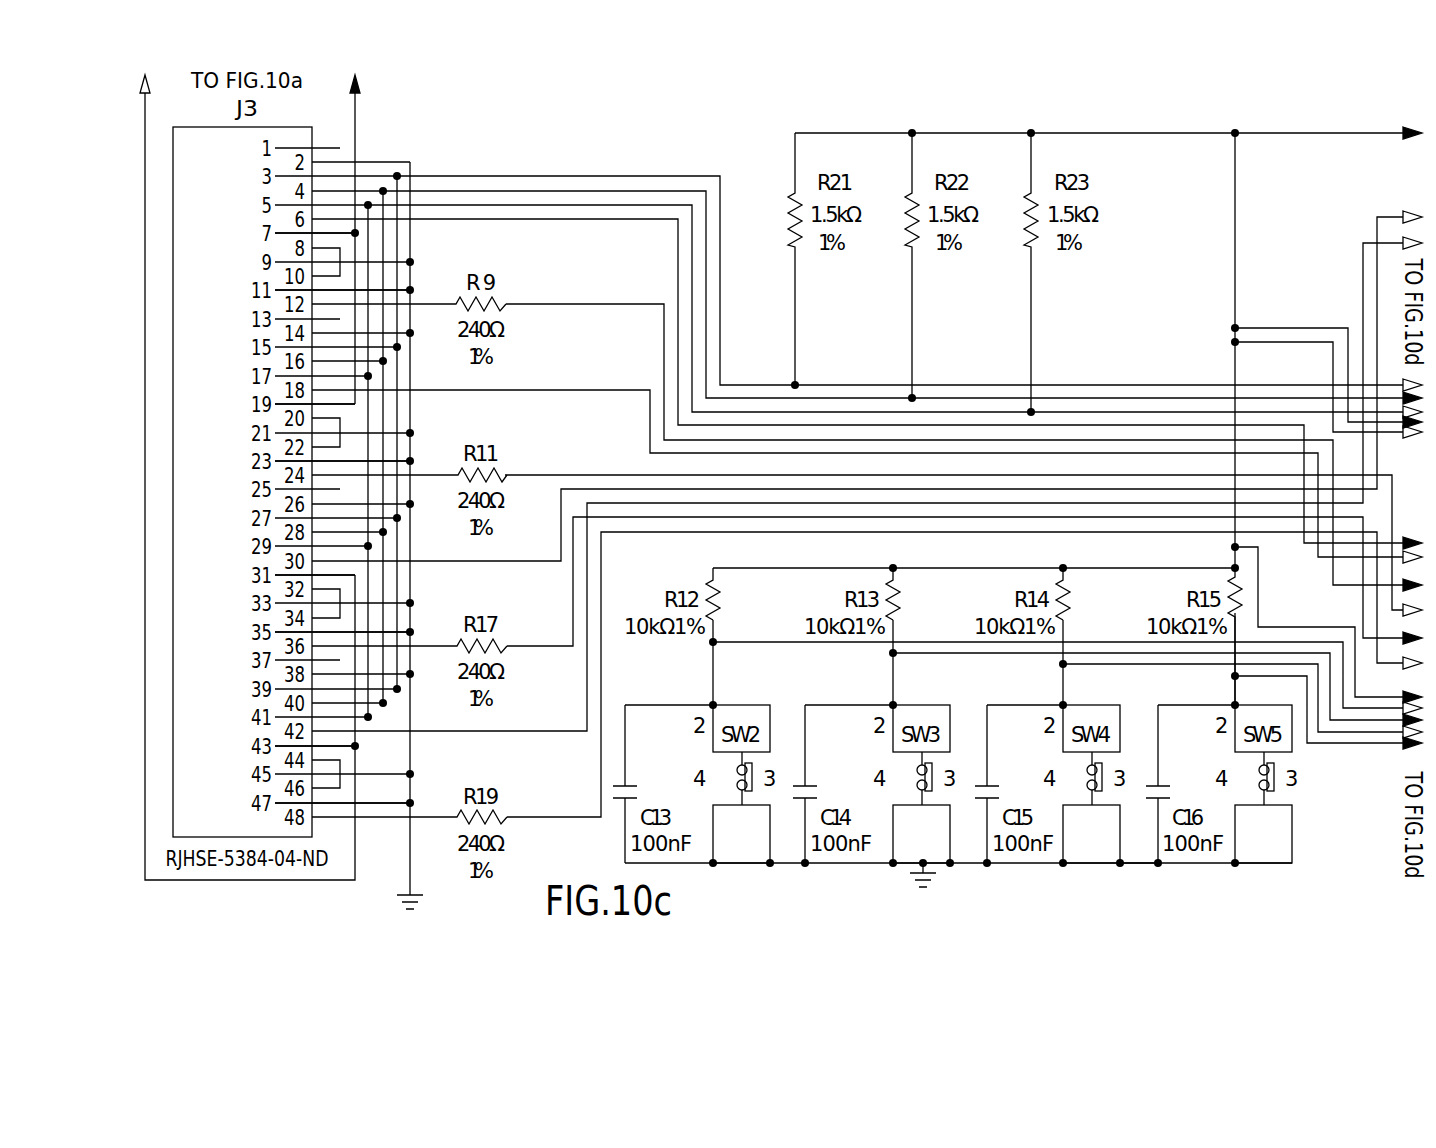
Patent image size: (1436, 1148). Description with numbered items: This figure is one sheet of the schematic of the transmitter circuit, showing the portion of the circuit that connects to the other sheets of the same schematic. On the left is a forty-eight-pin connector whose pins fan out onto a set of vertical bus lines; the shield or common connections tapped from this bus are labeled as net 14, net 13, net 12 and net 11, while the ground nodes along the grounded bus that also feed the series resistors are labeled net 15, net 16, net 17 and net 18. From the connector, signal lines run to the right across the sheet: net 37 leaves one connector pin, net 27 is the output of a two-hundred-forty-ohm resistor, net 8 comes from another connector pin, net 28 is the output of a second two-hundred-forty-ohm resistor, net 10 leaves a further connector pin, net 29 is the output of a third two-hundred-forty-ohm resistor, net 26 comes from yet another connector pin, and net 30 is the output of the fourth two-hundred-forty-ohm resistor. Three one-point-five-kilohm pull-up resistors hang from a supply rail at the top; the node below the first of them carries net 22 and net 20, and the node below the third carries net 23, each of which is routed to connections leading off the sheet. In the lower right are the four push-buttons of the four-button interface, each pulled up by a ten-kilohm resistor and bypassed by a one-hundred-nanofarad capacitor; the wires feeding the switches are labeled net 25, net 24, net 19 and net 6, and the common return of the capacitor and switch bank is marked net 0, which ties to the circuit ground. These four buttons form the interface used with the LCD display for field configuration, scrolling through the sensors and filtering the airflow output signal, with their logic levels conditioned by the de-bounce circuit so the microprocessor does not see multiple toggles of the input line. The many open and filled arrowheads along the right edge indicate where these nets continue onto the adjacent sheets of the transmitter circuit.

The ground net label 0 is at (1139, 843).
The signal line to SW5 6 is at (1252, 659).
The signal line from J3 pin 18 8 is at (867, 465).
The signal line from J3 pin 30 10 is at (867, 387).
The J3 pin 43 shield connection 11 is at (315, 748).
The J3 pin 31 shield connection 12 is at (315, 577).
The J3 pin 19 shield connection 13 is at (315, 406).
The J3 pin 7 shield connection 14 is at (315, 234).
The J3 pin 11 ground node 15 is at (356, 290).
The J3 pin 23 ground node 16 is at (356, 461).
The J3 pin 35 ground node 17 is at (356, 633).
The J3 pin 47 ground node 18 is at (356, 804).
The signal line to SW4 19 is at (1081, 662).
The signal line from R21 node 20 is at (1108, 374).
The signal line from J3 pin 3 22 is at (535, 280).
The signal line from R23 23 is at (1042, 272).
The signal line to SW3 24 is at (915, 662).
The signal line to SW2 25 is at (736, 662).
The signal line from J3 pin 42 26 is at (867, 484).
The signal line from R9 27 is at (964, 435).
The signal line from R11 28 is at (963, 533).
The signal line from R17 29 is at (964, 581).
The signal line from R19 30 is at (964, 674).
The signal line from J3 pin 6 37 is at (548, 221).